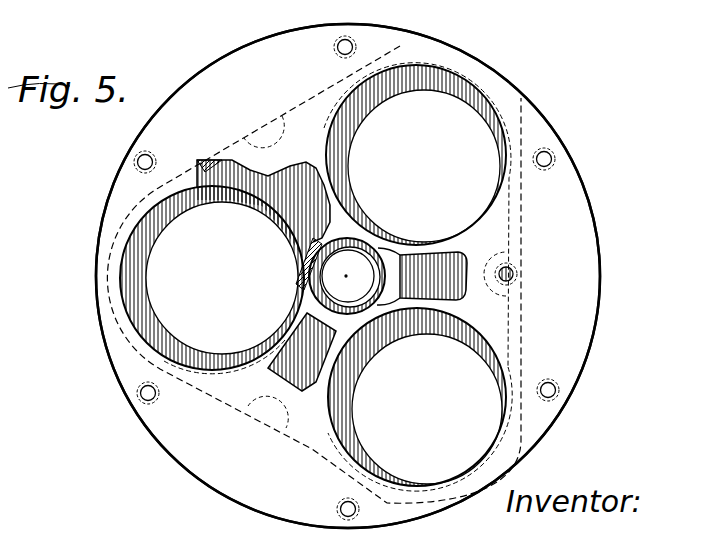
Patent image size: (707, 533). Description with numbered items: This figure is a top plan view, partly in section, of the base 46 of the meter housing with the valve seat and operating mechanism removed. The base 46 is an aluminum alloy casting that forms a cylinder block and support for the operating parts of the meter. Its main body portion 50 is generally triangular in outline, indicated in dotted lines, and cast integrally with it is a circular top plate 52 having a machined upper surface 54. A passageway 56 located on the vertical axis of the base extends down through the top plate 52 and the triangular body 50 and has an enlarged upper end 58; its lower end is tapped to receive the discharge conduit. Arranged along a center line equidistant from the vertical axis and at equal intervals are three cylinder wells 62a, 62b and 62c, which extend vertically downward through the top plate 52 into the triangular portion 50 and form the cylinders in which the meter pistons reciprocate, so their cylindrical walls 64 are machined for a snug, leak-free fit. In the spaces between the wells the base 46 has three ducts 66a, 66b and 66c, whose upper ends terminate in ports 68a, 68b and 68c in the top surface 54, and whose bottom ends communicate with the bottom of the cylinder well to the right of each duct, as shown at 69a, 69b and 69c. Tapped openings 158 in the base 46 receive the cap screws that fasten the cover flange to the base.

The base 46 is at (524, 90).
The main body portion 50 is at (516, 264).
The circular top plate 52 is at (572, 186).
The machined upper surface 54 is at (568, 294).
The passageway 56 is at (342, 255).
The enlarged upper end 58 is at (363, 255).
The cylinder well 62a is at (380, 469).
The cylinder well 62b is at (427, 238).
The cylinder well 62c is at (208, 364).
The cylindrical walls 64 is at (447, 86).
The duct 66a is at (322, 408).
The duct 66b is at (500, 216).
The duct 66c is at (250, 208).
The port 68a is at (324, 347).
The port 68b is at (455, 292).
The port 68c is at (310, 187).
The duct communication with cylinder well 69a is at (338, 348).
The duct communication with cylinder well 69b is at (457, 240).
The duct communication with cylinder well 69c is at (262, 178).
The tapped openings 158 is at (356, 44).